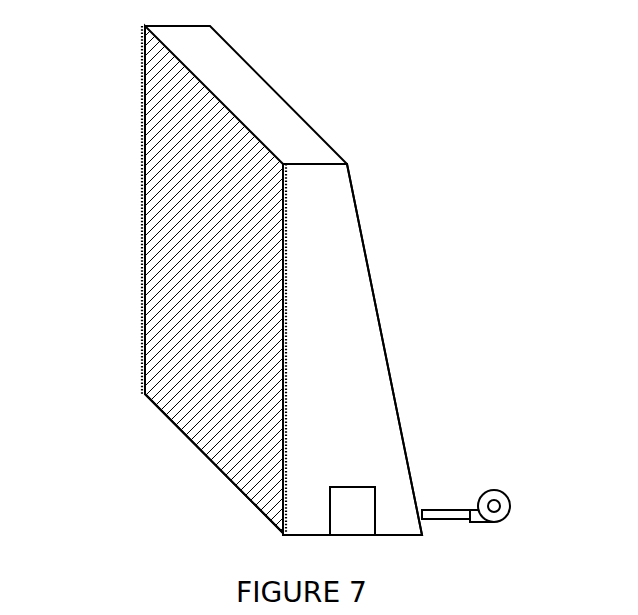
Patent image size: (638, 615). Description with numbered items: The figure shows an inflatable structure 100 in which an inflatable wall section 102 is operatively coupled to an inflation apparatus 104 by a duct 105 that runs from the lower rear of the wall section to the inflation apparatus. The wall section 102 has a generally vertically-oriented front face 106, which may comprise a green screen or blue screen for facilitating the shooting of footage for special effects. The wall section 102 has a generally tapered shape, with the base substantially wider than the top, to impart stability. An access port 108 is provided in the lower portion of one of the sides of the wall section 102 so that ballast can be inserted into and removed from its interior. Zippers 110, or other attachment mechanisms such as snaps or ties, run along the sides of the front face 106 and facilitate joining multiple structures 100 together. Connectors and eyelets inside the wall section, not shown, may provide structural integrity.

The structure 100 is at (497, 128).
The inflatable wall section 102 is at (403, 305).
The inflation apparatus 104 is at (500, 480).
The duct 105 is at (458, 520).
The front face 106 is at (163, 303).
The access port 108 is at (352, 518).
The zippers 110 is at (142, 80).